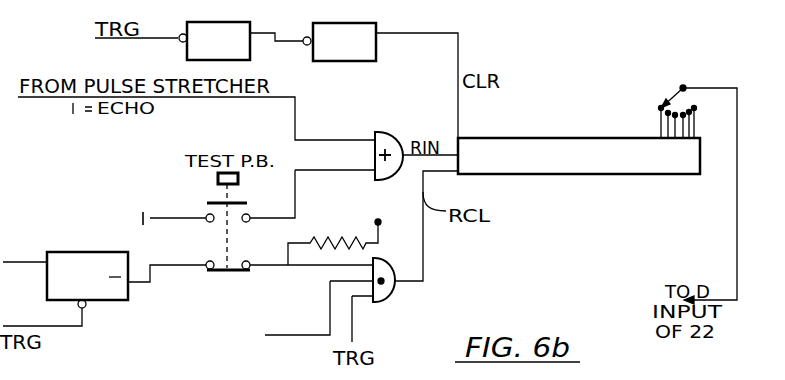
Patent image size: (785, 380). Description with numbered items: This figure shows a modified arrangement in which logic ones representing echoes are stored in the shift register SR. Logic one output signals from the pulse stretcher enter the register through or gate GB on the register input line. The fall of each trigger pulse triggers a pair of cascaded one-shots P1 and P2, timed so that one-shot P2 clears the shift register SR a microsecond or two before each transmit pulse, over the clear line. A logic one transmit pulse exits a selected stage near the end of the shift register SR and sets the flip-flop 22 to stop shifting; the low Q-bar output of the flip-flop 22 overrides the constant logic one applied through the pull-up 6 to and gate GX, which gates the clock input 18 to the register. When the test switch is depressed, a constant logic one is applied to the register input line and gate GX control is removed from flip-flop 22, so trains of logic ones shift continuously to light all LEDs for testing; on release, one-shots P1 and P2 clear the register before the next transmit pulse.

The flip-flop 22 is at (93, 251).
The clock line 18 is at (306, 334).
The +6 volt supply pull-up resistor 6 is at (337, 233).
The one-shot P1 is at (218, 41).
The one-shot P2 is at (344, 42).
The or gate GB is at (387, 143).
The and gate GX is at (399, 282).
The shift register SR is at (565, 138).